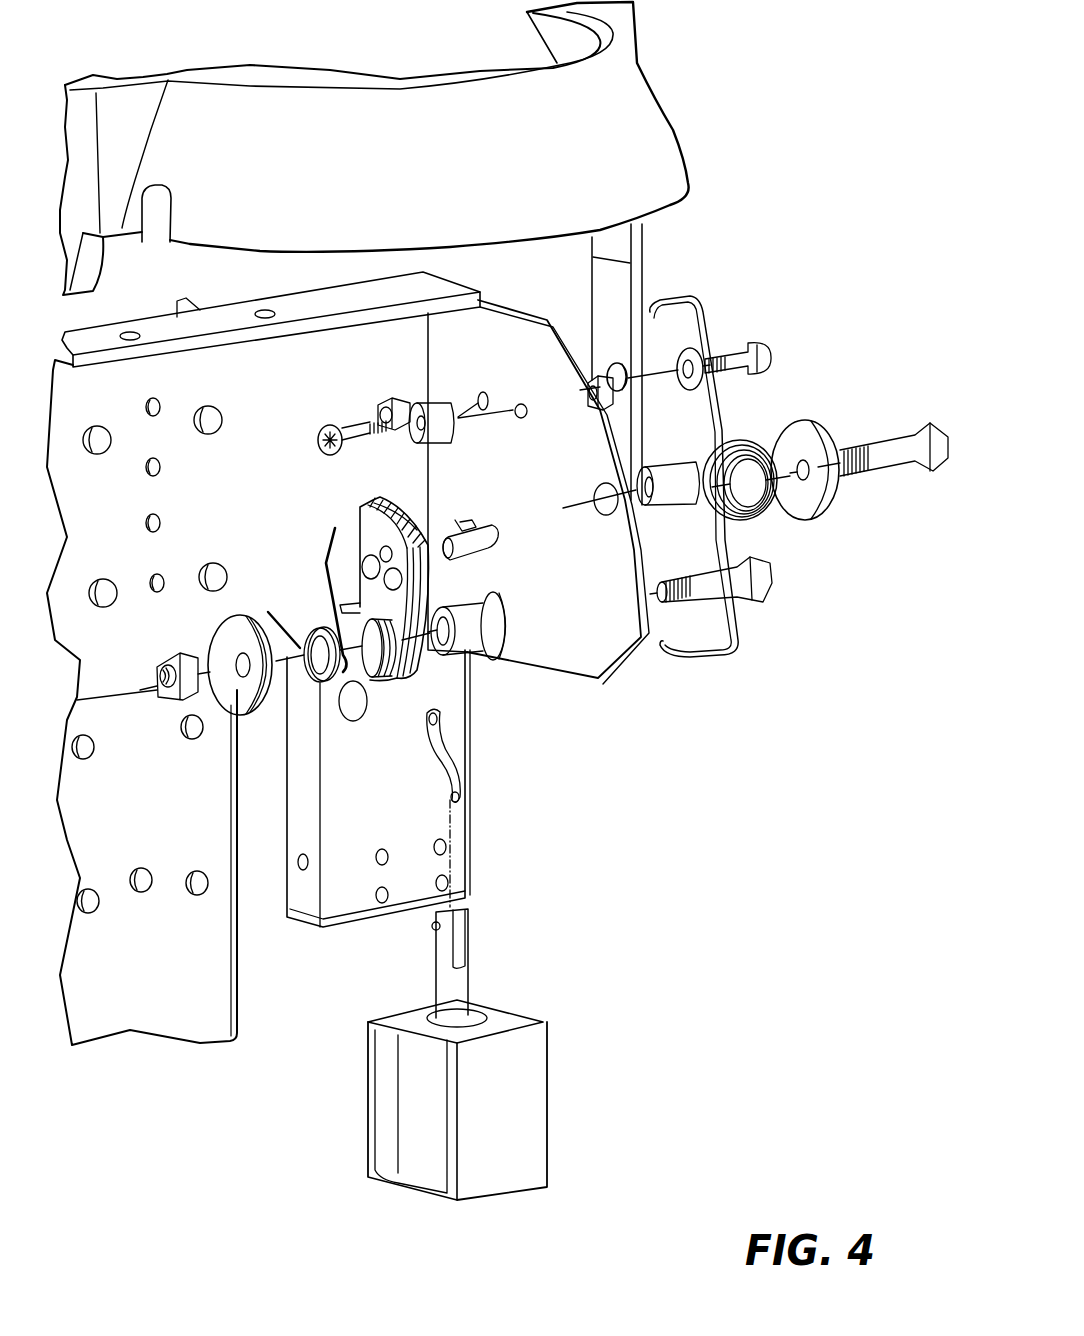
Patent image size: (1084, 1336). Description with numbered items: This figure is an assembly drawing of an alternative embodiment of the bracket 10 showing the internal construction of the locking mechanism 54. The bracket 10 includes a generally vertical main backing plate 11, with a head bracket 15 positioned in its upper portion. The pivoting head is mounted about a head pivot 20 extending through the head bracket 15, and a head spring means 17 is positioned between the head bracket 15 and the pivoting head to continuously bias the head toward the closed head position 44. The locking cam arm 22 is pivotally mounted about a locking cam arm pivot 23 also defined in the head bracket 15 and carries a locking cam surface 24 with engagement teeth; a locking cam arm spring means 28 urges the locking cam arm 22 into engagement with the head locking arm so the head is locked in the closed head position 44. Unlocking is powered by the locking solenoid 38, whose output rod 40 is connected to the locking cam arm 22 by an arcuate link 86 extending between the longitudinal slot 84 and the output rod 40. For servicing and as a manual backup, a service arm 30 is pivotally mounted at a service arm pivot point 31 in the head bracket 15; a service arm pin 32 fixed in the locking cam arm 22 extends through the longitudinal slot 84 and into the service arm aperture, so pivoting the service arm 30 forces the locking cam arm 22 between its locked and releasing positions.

The closed head position 44 is at (318, 177).
The bracket 10 is at (445, 290).
The main backing plate 11 is at (165, 817).
The head bracket 15 is at (587, 614).
The service arm 30 is at (630, 327).
The service arm pivot point 31 is at (606, 368).
The head spring means 17 is at (740, 437).
The head pivot 20 is at (600, 493).
The locking cam surface 24 is at (392, 500).
The locking mechanism 54 is at (365, 520).
The longitudinal slot means 84 is at (467, 524).
The service arm pin 32 is at (463, 553).
The locking cam arm 22 is at (418, 672).
The locking cam arm pivot 23 is at (467, 647).
The locking cam arm spring means 28 is at (317, 680).
The arcuate link 86 is at (440, 760).
The output rod 40 is at (443, 973).
The locking solenoid 38 is at (500, 1020).